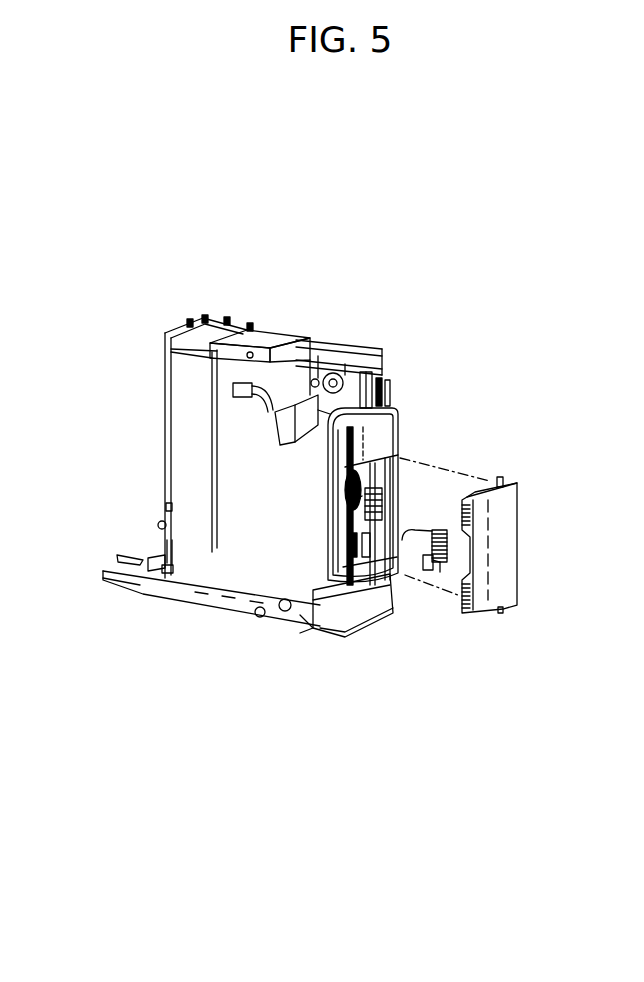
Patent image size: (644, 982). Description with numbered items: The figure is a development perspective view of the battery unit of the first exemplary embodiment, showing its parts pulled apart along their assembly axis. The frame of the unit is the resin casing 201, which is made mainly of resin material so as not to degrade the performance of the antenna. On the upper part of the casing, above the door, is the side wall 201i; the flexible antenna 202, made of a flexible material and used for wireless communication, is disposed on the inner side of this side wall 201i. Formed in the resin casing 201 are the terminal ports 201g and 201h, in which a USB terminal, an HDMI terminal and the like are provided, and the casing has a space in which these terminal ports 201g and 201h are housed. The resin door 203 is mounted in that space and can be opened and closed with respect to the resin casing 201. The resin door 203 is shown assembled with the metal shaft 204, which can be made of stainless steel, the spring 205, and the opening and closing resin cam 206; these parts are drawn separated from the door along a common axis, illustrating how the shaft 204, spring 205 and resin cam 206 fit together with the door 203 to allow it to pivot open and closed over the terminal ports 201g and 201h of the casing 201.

The resin casing 201 is at (248, 338).
The flexible antenna 202 is at (283, 415).
The side wall 201i is at (382, 443).
The terminal port 201g is at (357, 500).
The terminal port 201h is at (350, 595).
The resin door 203 is at (518, 590).
The metal shaft 204 is at (502, 477).
The spring 205 is at (437, 527).
The opening and closing resin cam 206 is at (432, 577).